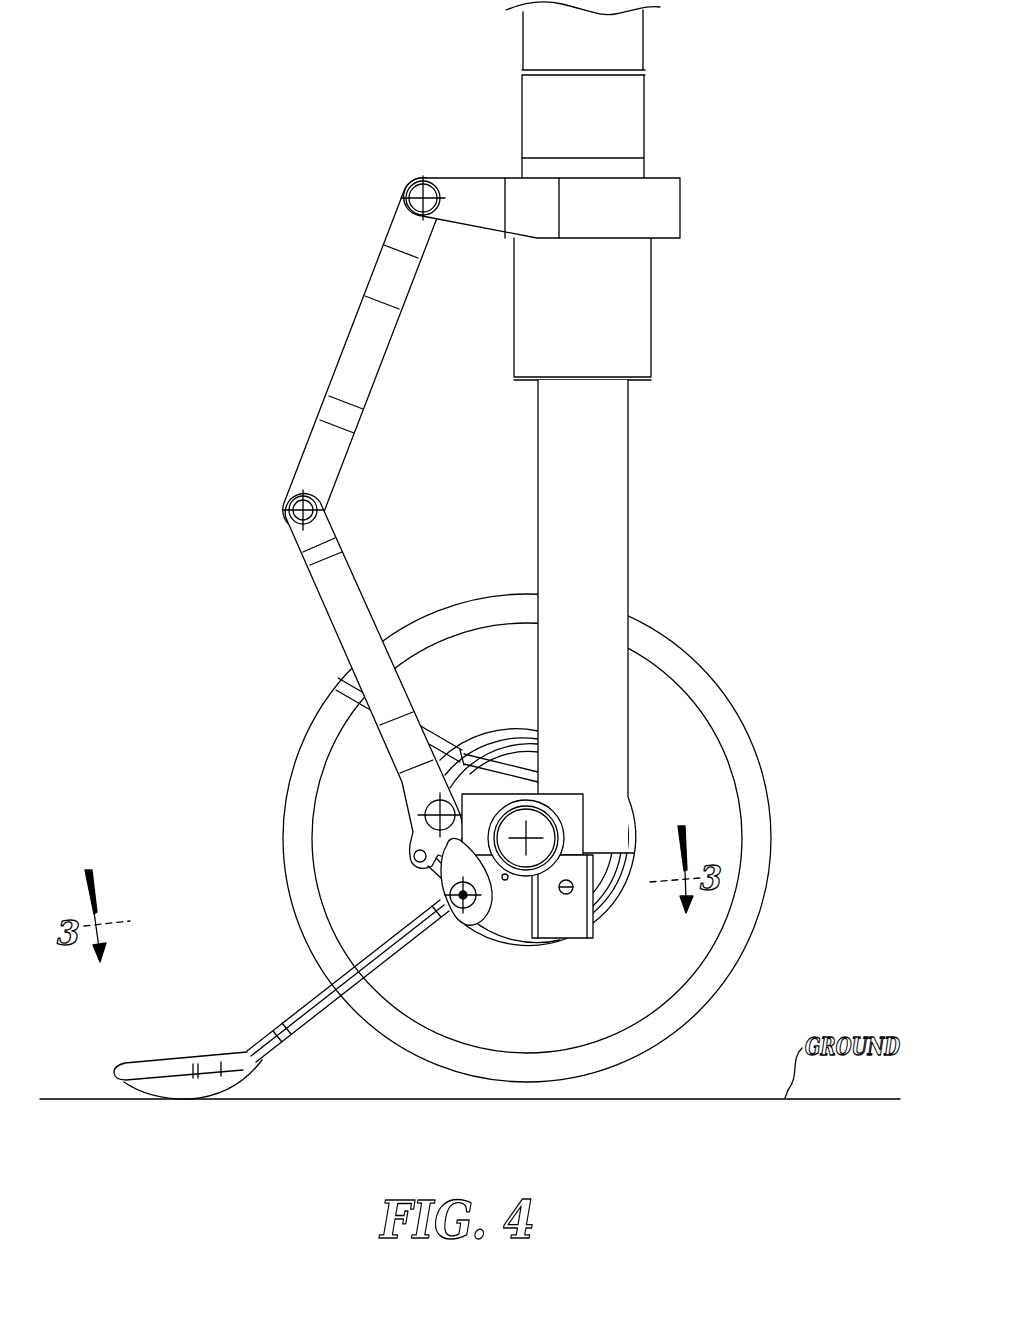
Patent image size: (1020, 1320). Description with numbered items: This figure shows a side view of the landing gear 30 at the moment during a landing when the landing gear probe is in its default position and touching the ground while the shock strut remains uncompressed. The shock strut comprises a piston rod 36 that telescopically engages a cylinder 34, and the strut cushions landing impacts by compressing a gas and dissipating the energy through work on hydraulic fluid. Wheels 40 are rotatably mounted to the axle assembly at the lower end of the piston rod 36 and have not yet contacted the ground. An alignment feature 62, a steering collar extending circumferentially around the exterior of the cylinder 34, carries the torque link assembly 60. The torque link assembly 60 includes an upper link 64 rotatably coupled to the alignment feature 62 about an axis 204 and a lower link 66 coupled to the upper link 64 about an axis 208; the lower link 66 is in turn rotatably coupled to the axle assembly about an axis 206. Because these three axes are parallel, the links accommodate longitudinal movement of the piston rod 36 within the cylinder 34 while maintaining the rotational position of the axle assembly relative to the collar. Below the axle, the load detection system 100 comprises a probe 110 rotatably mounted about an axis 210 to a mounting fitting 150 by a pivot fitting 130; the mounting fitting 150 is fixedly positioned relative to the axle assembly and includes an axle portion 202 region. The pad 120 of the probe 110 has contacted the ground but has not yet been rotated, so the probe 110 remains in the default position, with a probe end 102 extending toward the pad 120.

The landing gear 30 is at (738, 234).
The cylinder 34 is at (652, 305).
The piston rod 36 is at (630, 505).
The wheels 40 is at (730, 700).
The torque link assembly 60 is at (276, 437).
The alignment feature 62 is at (663, 178).
The upper link 64 is at (340, 360).
The lower link 66 is at (328, 612).
The load detection system 100 is at (457, 928).
The arm end 102 is at (297, 1046).
The probe 110 is at (268, 1034).
The pad 120 is at (133, 1070).
The pivot fitting 130 is at (487, 942).
The mounting fitting 150 is at (578, 921).
The axle 202 is at (545, 812).
The axis 204 is at (405, 191).
The axis 206 is at (428, 813).
The axis 208 is at (290, 507).
The axis 210 is at (452, 893).